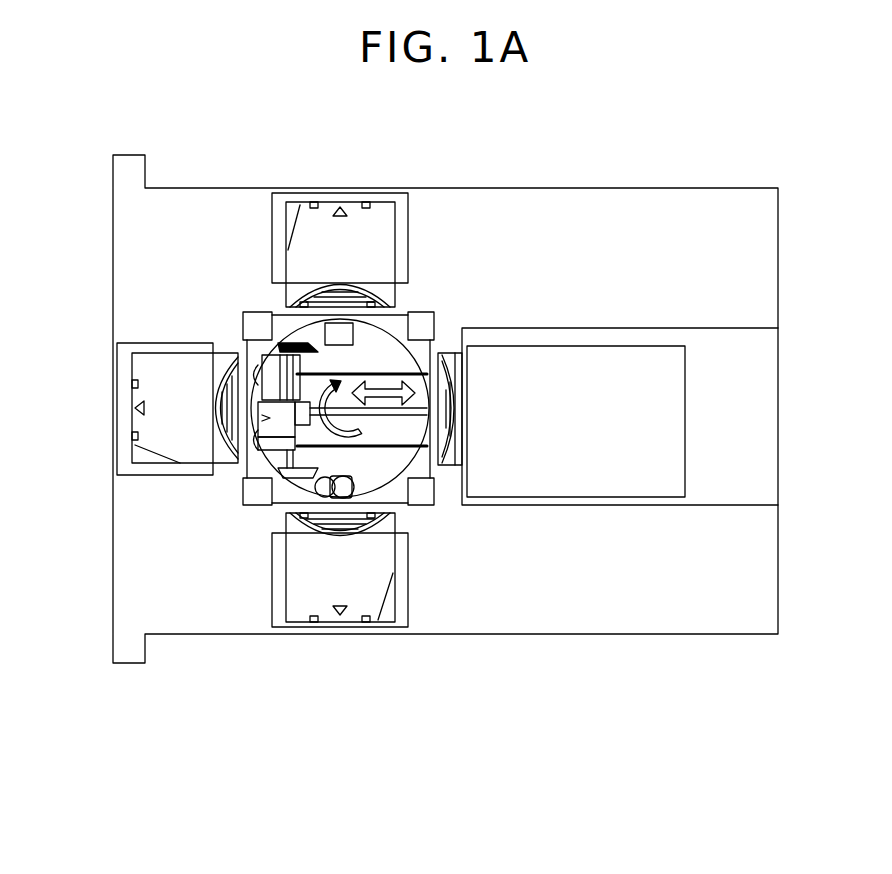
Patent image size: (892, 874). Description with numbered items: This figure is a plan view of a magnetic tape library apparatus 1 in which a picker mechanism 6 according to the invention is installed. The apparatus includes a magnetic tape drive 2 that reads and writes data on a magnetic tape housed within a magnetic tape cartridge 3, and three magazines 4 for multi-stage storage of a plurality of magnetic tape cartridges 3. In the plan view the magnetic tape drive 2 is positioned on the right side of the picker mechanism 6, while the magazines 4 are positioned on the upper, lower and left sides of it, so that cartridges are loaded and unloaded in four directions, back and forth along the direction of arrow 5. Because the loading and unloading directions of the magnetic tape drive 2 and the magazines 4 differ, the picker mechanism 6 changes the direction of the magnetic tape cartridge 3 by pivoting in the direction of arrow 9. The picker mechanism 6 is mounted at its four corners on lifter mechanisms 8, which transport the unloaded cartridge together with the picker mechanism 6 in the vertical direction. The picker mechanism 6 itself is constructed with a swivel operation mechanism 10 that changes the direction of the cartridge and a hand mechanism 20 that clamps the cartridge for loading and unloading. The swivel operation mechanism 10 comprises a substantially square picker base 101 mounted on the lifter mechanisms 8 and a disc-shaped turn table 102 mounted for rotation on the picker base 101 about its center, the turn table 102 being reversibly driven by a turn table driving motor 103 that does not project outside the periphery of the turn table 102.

The magnetic tape library apparatus 1 is at (573, 112).
The magnetic tape drive 2 is at (637, 345).
The magnetic tape cartridge 3 is at (351, 202).
The magazine 4 is at (408, 228).
The arrow 5 is at (375, 478).
The picker mechanism 6 is at (270, 308).
The lifter mechanism 8 is at (243, 320).
The arrow 9 is at (287, 487).
The swivel operation mechanism 10 is at (400, 316).
The hand mechanism 20 is at (252, 420).
The picker base 101 is at (325, 420).
The turn table 102 is at (383, 403).
The turn table driving motor 103 is at (340, 498).